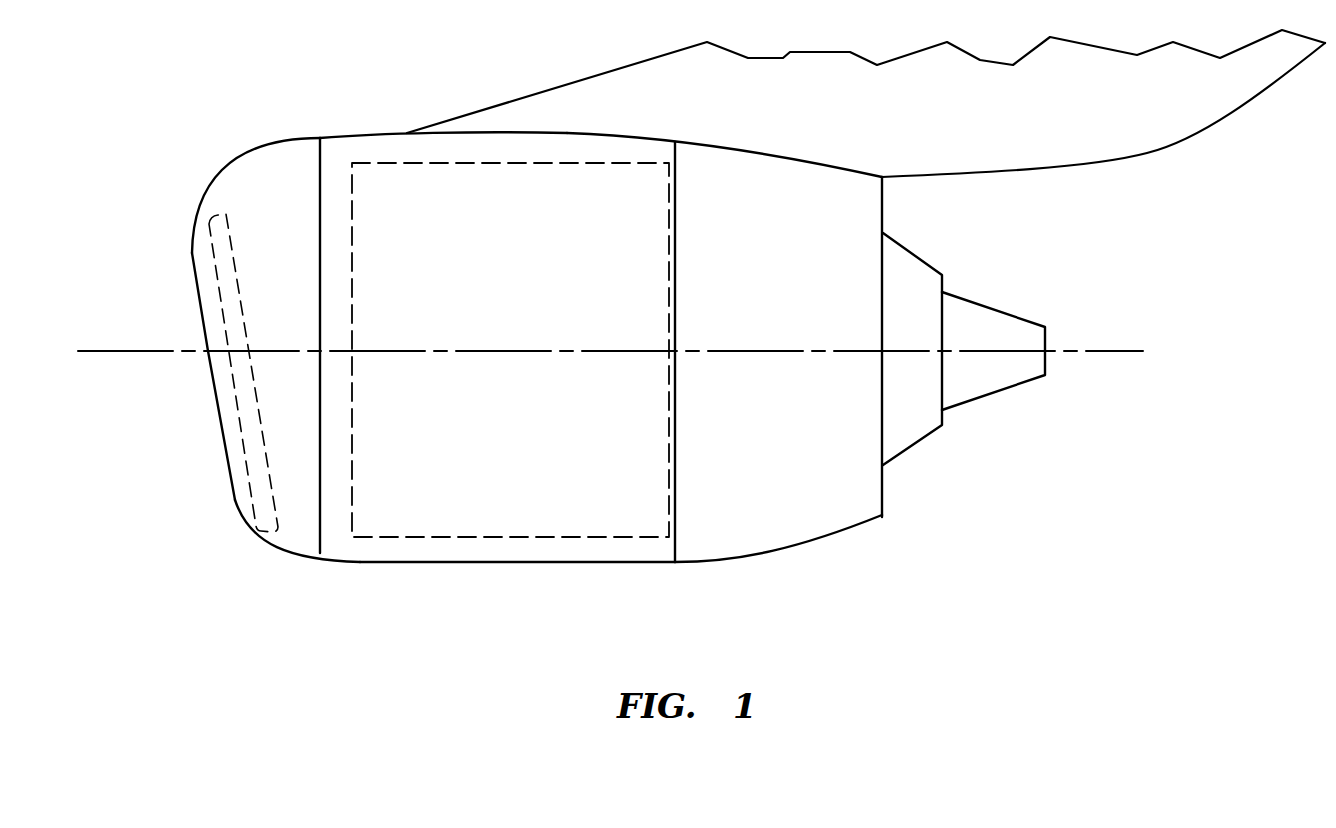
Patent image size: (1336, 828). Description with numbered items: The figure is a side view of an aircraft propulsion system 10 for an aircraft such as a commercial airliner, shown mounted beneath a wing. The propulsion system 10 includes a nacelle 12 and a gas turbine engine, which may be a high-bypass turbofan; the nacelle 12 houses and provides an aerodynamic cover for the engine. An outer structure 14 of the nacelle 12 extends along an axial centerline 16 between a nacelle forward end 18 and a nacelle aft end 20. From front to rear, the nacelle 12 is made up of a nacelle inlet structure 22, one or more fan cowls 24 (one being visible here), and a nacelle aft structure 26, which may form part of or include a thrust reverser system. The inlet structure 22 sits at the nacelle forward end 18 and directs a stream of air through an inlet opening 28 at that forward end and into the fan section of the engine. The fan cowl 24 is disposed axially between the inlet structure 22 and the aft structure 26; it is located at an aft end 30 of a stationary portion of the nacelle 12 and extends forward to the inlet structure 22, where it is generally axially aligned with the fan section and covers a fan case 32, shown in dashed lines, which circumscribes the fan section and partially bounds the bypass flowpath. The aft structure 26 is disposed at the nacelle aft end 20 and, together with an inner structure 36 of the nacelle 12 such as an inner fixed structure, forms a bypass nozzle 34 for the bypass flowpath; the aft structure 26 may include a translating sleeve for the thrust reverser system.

The aircraft propulsion system 10 is at (189, 120).
The nacelle 12 is at (546, 345).
The outer structure 14 is at (367, 122).
The axial centerline 16 is at (1132, 353).
The nacelle forward end 18 is at (193, 268).
The nacelle aft end 20 is at (883, 203).
The nacelle inlet structure 22 is at (274, 569).
The fan cowl 24 is at (472, 580).
The nacelle aft structure 26 is at (783, 566).
The inlet opening 28 is at (200, 310).
The aft end of stationary portion of the nacelle 30 is at (677, 147).
The fan case 32 is at (550, 538).
The bypass nozzle 34 is at (896, 492).
The inner structure 36 is at (920, 442).